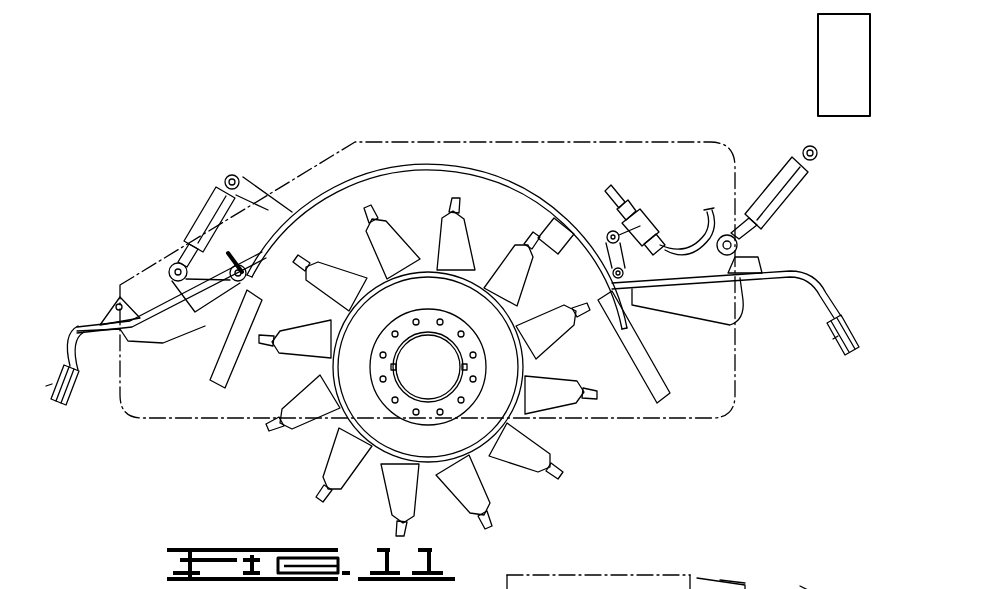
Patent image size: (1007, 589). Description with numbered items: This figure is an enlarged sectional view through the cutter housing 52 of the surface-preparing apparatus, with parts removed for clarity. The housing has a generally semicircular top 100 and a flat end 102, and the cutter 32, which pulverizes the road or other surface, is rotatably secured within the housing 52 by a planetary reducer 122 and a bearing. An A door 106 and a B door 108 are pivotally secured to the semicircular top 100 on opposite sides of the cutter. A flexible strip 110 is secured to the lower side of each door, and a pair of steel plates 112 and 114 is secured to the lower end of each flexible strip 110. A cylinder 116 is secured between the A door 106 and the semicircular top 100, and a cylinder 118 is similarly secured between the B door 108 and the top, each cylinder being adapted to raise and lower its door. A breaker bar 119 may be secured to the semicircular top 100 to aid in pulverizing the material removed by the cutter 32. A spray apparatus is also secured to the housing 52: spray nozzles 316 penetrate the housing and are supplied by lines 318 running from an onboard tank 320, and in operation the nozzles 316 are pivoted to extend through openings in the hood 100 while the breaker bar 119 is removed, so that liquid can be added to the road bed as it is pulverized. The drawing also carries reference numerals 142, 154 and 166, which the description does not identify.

The cutter housing 52 is at (465, 86).
The semicircular top 100 is at (503, 172).
The flat end 102 is at (327, 172).
The A door 106 is at (765, 268).
The B door 108 is at (88, 305).
The flexible strip 110 is at (60, 345).
The steel plate 112 is at (52, 398).
The steel plate 114 is at (67, 410).
The cylinder 116 is at (817, 155).
The cylinder 118 is at (207, 211).
The breaker bar 119 is at (552, 212).
The planetary reducer 122 is at (465, 402).
The cutter 32 is at (562, 466).
The spray nozzle 316 is at (660, 238).
The line 318 is at (735, 222).
The onboard tank 320 is at (818, 40).
The axis line 142 is at (578, 576).
The support 154 is at (730, 582).
The bracket 166 is at (826, 588).